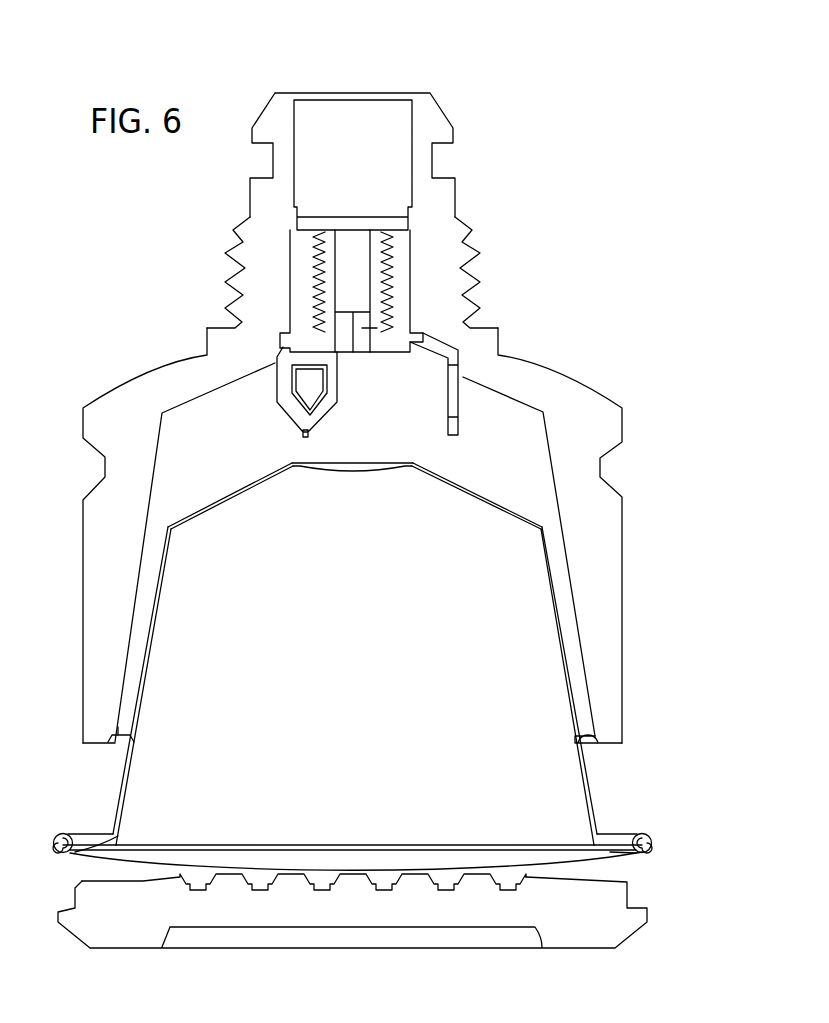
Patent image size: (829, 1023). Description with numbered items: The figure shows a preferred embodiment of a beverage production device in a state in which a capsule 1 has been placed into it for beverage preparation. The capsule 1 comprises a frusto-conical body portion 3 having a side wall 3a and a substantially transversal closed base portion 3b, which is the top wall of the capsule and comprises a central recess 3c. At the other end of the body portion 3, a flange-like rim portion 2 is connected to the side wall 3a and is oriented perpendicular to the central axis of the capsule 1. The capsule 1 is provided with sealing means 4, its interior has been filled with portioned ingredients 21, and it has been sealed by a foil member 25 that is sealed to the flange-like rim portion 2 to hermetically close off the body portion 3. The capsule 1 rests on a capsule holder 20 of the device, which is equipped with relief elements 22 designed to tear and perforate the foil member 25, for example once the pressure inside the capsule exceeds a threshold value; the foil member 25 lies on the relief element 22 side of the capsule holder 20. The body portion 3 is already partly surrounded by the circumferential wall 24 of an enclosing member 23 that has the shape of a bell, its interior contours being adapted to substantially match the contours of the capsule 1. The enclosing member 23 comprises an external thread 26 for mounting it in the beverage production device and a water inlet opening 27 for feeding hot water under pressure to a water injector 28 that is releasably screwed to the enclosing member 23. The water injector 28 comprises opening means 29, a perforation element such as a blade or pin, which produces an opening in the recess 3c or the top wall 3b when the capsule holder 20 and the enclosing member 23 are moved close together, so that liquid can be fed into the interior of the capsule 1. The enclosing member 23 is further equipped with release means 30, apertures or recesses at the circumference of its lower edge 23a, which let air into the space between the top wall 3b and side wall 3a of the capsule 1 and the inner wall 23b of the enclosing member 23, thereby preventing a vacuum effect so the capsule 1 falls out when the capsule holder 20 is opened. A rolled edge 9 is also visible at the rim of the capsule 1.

The capsule 1 is at (548, 538).
The flange-like rim portion 2 is at (621, 852).
The frusto-conical body portion 3 is at (565, 667).
The side wall 3a is at (594, 790).
The base portion 3b is at (450, 490).
The central recess 3c is at (347, 468).
The sealing means 4 is at (597, 838).
The rolled edge 9 is at (652, 846).
The capsule holder 20 is at (620, 932).
The portioned ingredients 21 is at (530, 634).
The relief elements 22 is at (405, 875).
The enclosing member 23 is at (622, 540).
The lower edge 23a is at (618, 740).
The inner wall 23b is at (572, 583).
The circumferential wall 24 is at (83, 575).
The foil member 25 is at (177, 852).
The external thread 26 is at (482, 256).
The water inlet opening 27 is at (370, 112).
The water injector 28 is at (362, 328).
The opening means 29 is at (458, 428).
The release means 30 is at (120, 740).